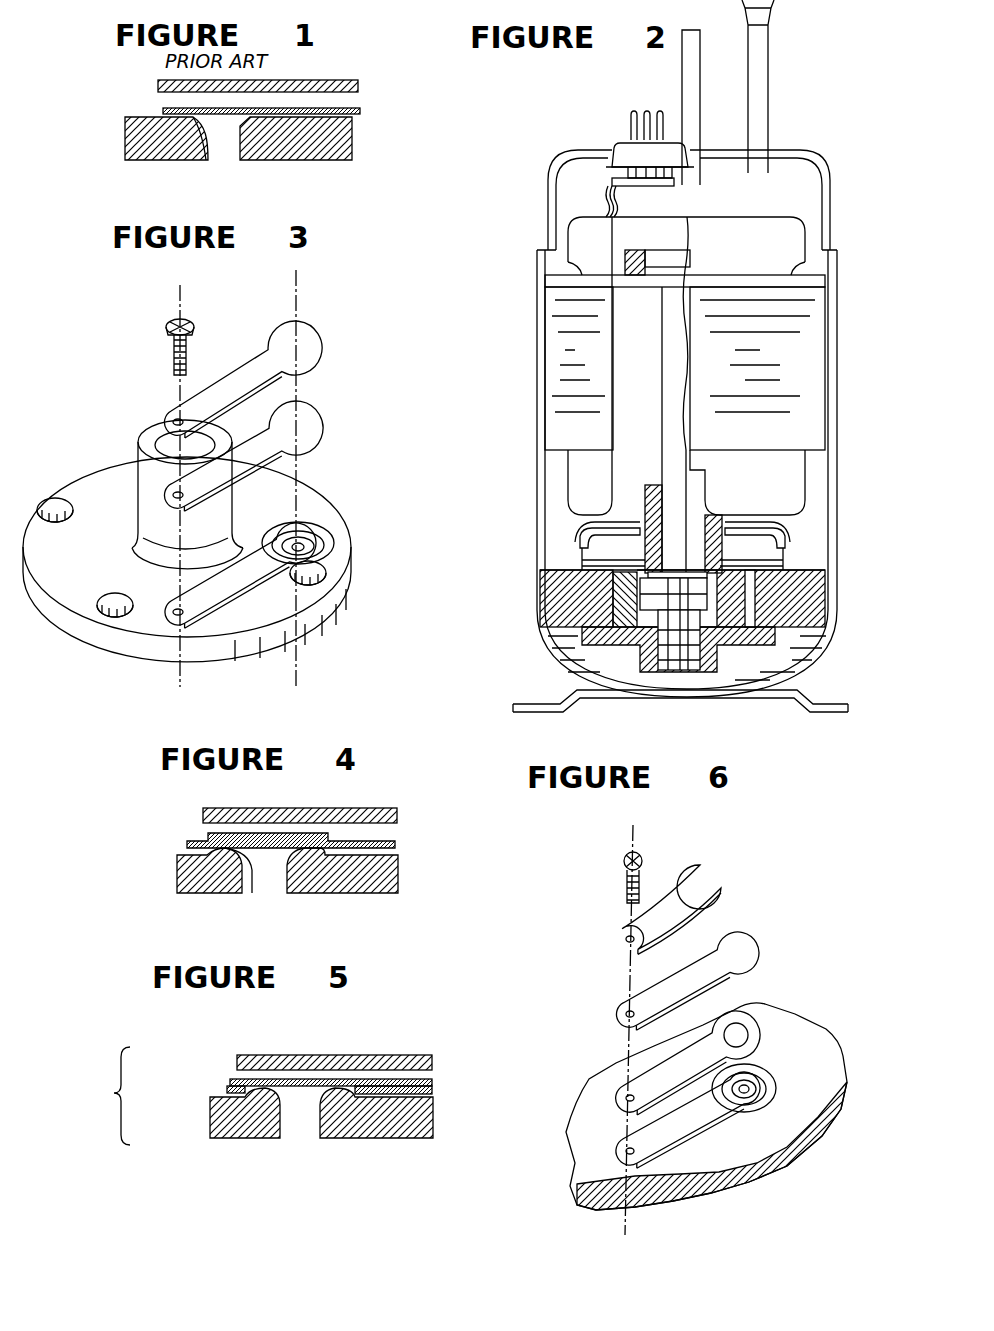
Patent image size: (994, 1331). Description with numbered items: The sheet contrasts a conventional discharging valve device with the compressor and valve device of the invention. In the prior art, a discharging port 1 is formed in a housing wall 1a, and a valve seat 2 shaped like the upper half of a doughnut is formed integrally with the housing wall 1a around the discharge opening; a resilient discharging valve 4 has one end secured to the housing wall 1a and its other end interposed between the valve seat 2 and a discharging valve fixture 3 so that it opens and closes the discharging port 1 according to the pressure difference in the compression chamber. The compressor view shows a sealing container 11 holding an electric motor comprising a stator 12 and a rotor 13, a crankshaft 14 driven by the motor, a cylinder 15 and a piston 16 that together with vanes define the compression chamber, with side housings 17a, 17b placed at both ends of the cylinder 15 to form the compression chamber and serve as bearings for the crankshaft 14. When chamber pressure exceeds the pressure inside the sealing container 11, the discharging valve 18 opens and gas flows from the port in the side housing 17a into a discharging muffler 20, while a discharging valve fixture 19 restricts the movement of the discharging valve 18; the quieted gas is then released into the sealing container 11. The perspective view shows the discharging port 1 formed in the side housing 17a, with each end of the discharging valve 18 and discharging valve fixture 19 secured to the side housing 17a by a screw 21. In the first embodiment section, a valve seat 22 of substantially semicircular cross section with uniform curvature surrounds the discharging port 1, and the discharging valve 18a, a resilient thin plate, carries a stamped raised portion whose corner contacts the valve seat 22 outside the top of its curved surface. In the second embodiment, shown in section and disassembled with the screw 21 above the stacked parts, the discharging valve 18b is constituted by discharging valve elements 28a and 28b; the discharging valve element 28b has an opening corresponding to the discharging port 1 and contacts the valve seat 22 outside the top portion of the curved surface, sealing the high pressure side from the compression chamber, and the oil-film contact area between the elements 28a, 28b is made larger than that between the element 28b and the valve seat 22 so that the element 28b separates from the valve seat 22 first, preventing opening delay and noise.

In FIG. 1, the discharging port 1 is at (226, 150).
In FIG. 4, the discharging port 1 is at (272, 870).
In FIG. 5, the discharging port 1 is at (298, 1118).
In FIG. 6, the discharging port 1 is at (744, 1094).
In FIG. 1, the housing wall 1a is at (355, 113).
In FIG. 1, the valve seat 2 is at (202, 158).
In FIG. 1, the discharging valve fixture 3 is at (158, 85).
In FIG. 1, the discharging valve 4 is at (163, 111).
In FIG. 2, the sealing container 11 is at (832, 405).
In FIG. 2, the stator 12 is at (805, 340).
In FIG. 2, the rotor 13 is at (635, 356).
In FIG. 2, the crankshaft 14 is at (672, 650).
In FIG. 2, the cylinder 15 is at (790, 600).
In FIG. 2, the piston 16 is at (624, 612).
In FIG. 2, the side housing 17a is at (765, 556).
In FIG. 3, the side housing 17a is at (316, 498).
In FIG. 4, the side housing 17a is at (385, 870).
In FIG. 5, the side housing 17a is at (420, 1110).
In FIG. 6, the side housing 17a is at (821, 1067).
In FIG. 2, the side housing 17b is at (770, 640).
In FIG. 2, the discharging valve 18 is at (590, 562).
In FIG. 3, the discharging valve 18 is at (306, 428).
In FIG. 4, the discharging valve 18a is at (187, 843).
In FIG. 5, the discharging valve 18b is at (95, 1096).
In FIG. 2, the discharging valve fixture 19 is at (580, 550).
In FIG. 3, the discharging valve fixture 19 is at (302, 347).
In FIG. 4, the discharging valve fixture 19 is at (203, 812).
In FIG. 5, the discharging valve fixture 19 is at (237, 1062).
In FIG. 6, the discharging valve fixture 19 is at (746, 878).
In FIG. 2, the discharging muffler 20 is at (585, 538).
In FIG. 3, the screw 21 is at (192, 320).
In FIG. 6, the screw 21 is at (624, 864).
In FIG. 4, the valve seat 22 is at (252, 880).
In FIG. 5, the valve seat 22 is at (285, 1100).
In FIG. 6, the valve seat 22 is at (763, 1086).
In FIG. 5, the discharging valve element 28a is at (230, 1082).
In FIG. 6, the discharging valve element 28a is at (755, 941).
In FIG. 5, the discharging valve element 28b is at (228, 1090).
In FIG. 6, the discharging valve element 28b is at (765, 1010).